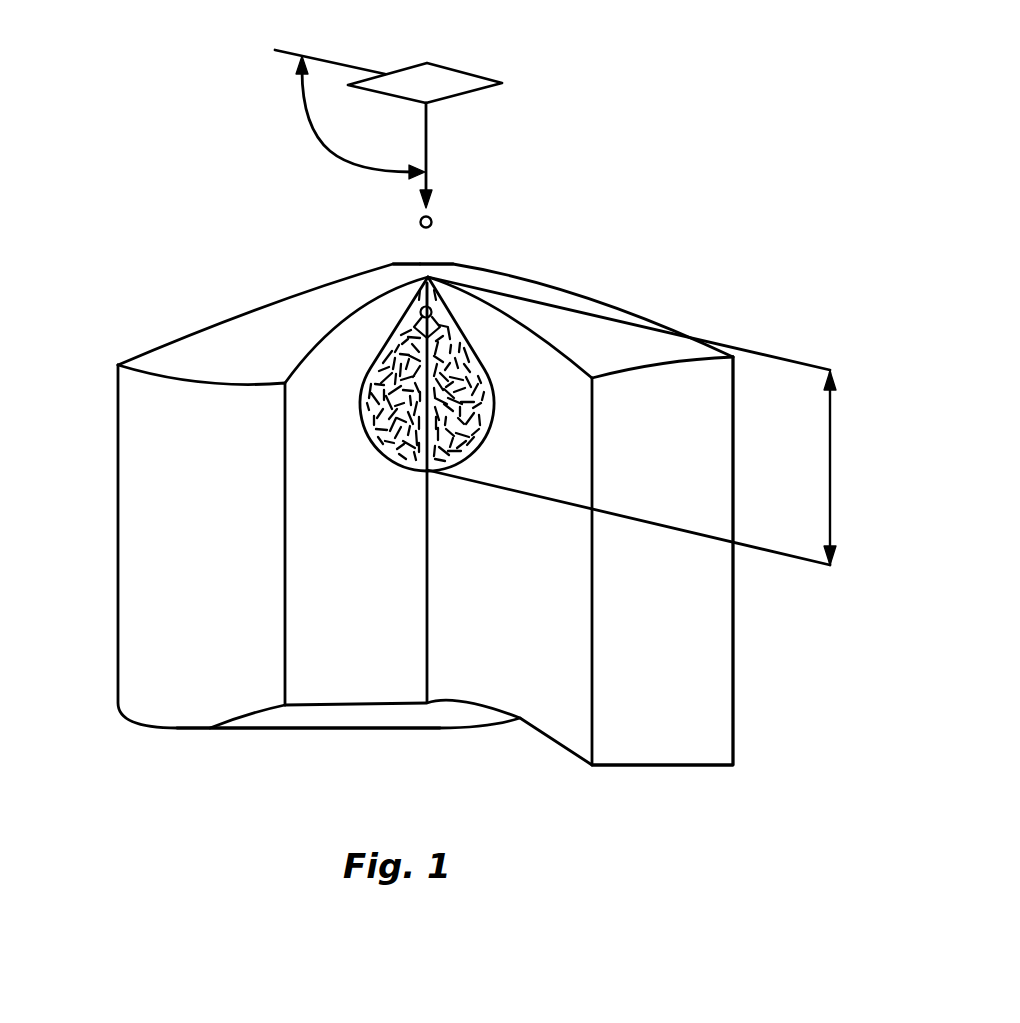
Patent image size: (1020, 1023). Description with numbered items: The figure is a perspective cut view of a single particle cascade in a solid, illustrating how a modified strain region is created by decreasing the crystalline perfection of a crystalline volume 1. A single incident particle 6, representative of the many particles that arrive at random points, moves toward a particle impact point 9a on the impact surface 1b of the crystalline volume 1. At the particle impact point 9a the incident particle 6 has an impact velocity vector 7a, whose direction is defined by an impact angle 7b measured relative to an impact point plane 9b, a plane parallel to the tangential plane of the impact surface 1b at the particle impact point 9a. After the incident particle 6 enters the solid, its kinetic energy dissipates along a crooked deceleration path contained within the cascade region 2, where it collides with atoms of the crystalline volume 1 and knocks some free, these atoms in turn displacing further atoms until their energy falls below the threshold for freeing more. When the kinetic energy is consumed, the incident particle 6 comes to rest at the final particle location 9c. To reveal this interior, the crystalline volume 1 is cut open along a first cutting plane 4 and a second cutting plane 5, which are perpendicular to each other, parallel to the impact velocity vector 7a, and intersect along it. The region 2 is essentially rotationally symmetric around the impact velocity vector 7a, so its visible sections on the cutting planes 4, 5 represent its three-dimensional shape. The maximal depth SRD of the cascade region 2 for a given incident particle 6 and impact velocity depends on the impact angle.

The crystalline volume 1 is at (118, 630).
The impact surface 1b is at (265, 316).
The cascade region 2 is at (384, 340).
The first cutting plane 4 is at (577, 657).
The second cutting plane 5 is at (306, 685).
The incident particle 6 is at (431, 217).
The impact velocity vector 7a is at (428, 121).
The impact angle 7b is at (328, 150).
The particle impact point 9a is at (398, 270).
The impact point plane 9b is at (457, 71).
The final particle location 9c is at (463, 264).
The maximal depth SRD is at (832, 420).